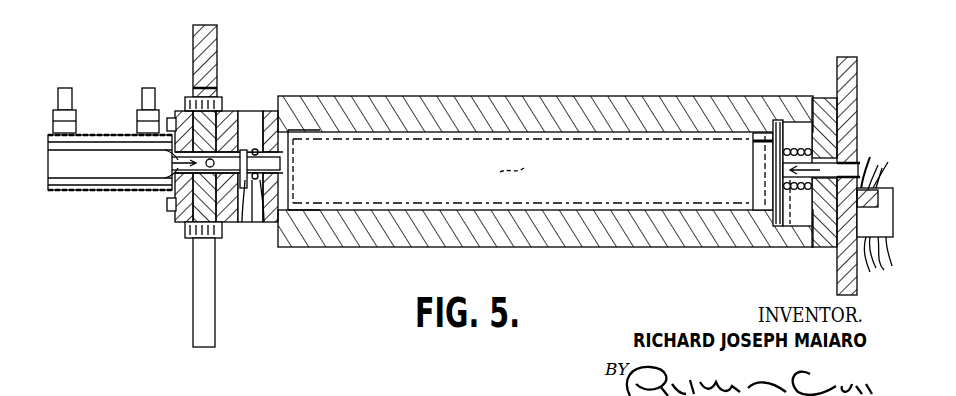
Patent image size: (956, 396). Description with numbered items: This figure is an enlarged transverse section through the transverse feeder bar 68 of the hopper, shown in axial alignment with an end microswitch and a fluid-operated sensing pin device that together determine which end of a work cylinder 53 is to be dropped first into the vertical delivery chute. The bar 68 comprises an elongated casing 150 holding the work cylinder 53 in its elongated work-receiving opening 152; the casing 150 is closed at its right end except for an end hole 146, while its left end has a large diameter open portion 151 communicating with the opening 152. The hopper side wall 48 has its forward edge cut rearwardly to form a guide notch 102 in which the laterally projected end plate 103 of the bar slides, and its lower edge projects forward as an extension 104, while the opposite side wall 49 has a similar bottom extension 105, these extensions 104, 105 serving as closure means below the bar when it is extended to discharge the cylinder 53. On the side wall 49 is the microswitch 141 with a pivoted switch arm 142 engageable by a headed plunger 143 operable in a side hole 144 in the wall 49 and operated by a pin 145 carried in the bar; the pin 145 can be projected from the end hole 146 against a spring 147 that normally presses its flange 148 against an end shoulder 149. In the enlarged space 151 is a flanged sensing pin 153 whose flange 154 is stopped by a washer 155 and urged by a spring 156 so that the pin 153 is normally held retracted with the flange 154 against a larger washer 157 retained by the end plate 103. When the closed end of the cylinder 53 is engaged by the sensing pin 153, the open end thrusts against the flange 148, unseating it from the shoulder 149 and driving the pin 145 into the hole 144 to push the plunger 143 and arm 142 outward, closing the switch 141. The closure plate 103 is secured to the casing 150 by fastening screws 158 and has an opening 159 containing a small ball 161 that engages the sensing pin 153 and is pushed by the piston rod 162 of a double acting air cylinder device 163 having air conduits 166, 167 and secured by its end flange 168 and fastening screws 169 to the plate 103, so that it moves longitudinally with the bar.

The hopper side wall 48 is at (193, 40).
The side wall 49 is at (850, 62).
The work cylinder 53 is at (513, 162).
The transverse feeder bar 68 is at (470, 96).
The guide notch 102 is at (217, 90).
The end plate 103 is at (186, 218).
The projected extension 104 is at (200, 310).
The bottom extension 105 is at (838, 258).
The microswitch 141 is at (882, 269).
The pivoted switch arm 142 is at (878, 165).
The headed plunger 143 is at (870, 157).
The side hole 144 is at (852, 160).
The pin 145 is at (806, 148).
The end hole 146 is at (822, 150).
The spring 147 is at (780, 165).
The flange 148 is at (766, 166).
The end shoulder 149 is at (768, 236).
The elongated casing 150 is at (556, 108).
The large diameter open portion 151 is at (275, 128).
The work-receiving opening 152 is at (386, 137).
The sensing pin 153 is at (268, 165).
The flange 154 is at (242, 222).
The washer 155 is at (291, 232).
The spring 156 is at (264, 222).
The larger washer 157 is at (236, 224).
The fastening screws 158 is at (192, 238).
The opening 159 is at (190, 118).
The ball 161 is at (258, 124).
The piston rod 162 is at (168, 162).
The double acting air cylinder device 163 is at (113, 162).
The air conduit 166 is at (68, 100).
The air conduit 167 is at (147, 98).
The end flange 168 is at (178, 222).
The fastening screws 169 is at (168, 205).